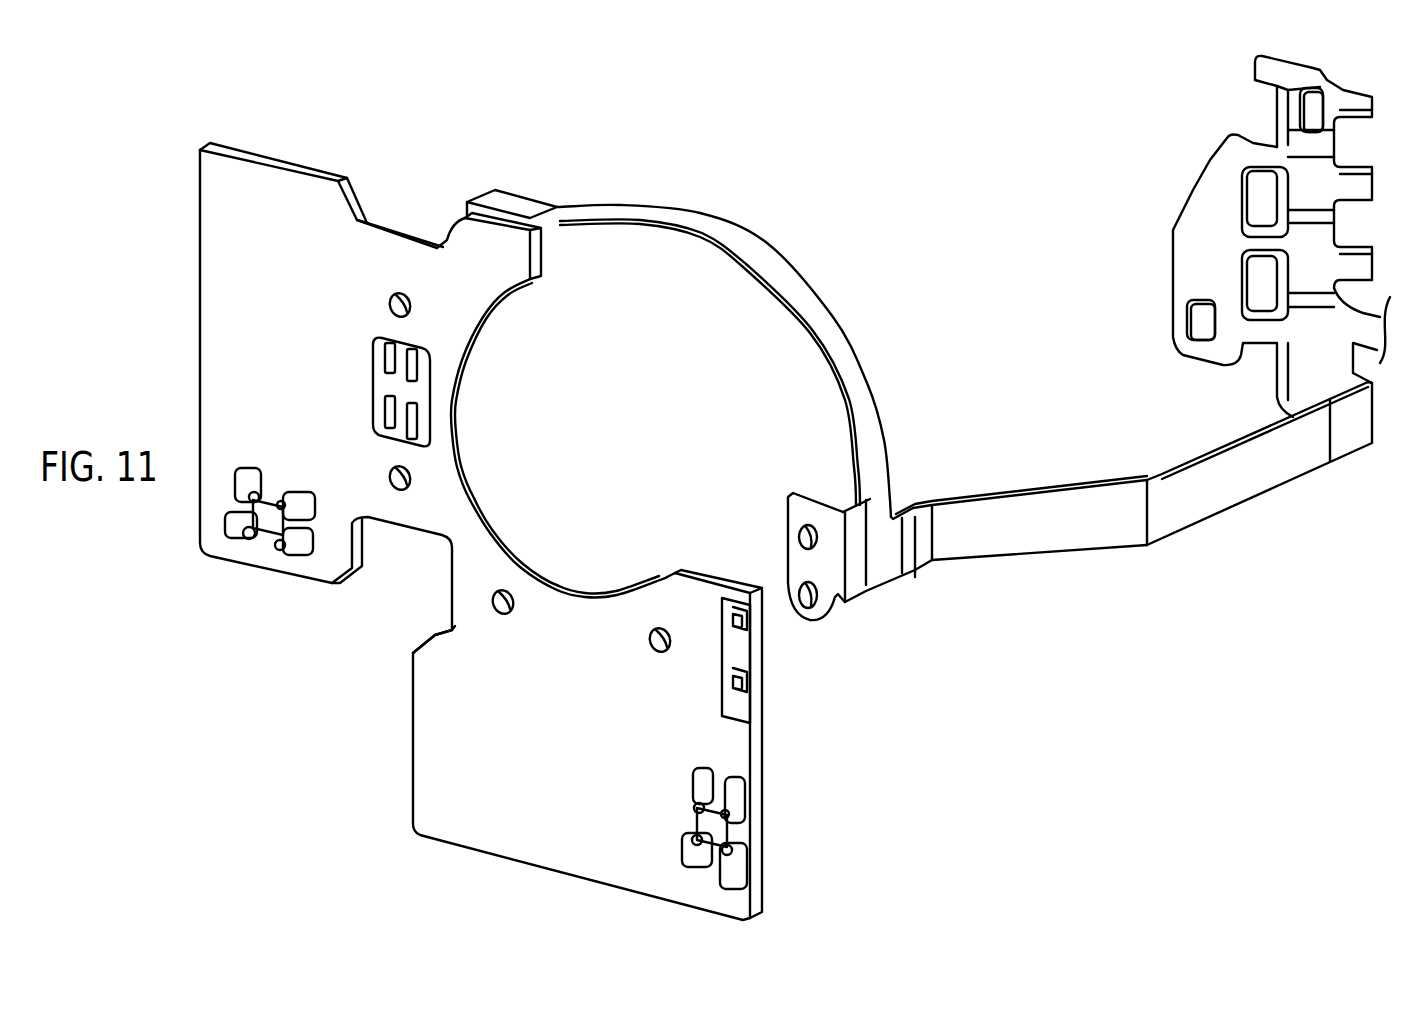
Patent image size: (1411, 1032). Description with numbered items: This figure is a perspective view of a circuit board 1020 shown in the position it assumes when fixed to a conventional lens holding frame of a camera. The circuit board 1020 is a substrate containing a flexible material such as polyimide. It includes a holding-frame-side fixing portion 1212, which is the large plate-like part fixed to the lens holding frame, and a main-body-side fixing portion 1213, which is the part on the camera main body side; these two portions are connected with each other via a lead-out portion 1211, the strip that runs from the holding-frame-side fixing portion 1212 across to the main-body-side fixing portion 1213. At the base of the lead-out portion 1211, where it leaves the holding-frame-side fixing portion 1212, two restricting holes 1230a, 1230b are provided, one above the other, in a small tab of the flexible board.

The circuit board 1020 is at (780, 230).
The lead-out portion 1211 is at (1080, 551).
The holding-frame-side fixing portion 1212 is at (443, 723).
The main-body-side fixing portion 1213 is at (1200, 213).
The restricting hole 1230a is at (810, 543).
The restricting hole 1230b is at (808, 603).